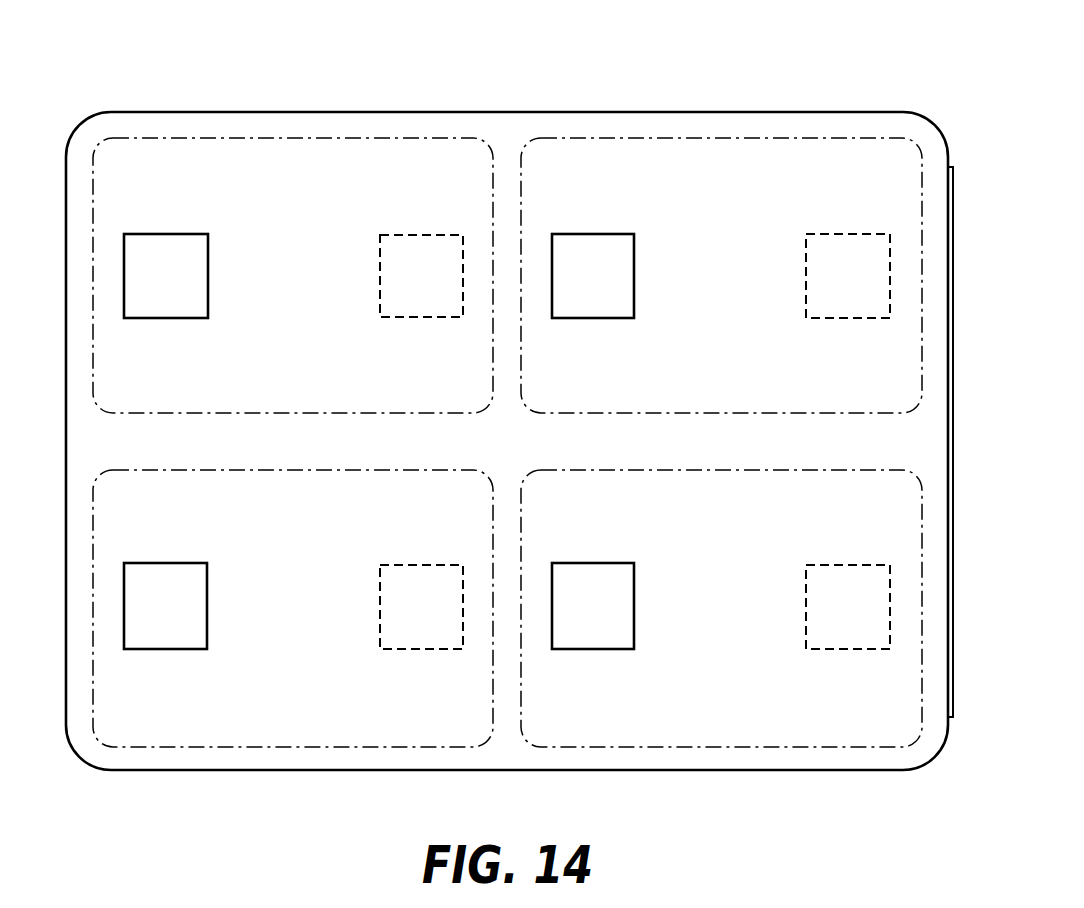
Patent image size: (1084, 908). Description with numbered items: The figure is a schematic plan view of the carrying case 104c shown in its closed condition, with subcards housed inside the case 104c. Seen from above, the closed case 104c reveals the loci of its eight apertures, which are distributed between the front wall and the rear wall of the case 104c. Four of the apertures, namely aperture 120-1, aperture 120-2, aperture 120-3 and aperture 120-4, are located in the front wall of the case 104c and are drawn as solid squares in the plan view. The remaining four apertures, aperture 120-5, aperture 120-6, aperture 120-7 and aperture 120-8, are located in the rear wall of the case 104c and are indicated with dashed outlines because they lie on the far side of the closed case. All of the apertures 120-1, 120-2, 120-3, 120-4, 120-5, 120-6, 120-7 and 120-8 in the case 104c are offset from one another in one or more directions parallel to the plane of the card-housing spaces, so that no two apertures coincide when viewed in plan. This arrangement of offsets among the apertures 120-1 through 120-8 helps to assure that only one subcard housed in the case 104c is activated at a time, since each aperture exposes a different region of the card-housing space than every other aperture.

The case 104c is at (664, 106).
The aperture 120-1 is at (168, 240).
The aperture 120-2 is at (168, 570).
The aperture 120-3 is at (595, 570).
The aperture 120-4 is at (595, 240).
The aperture 120-5 is at (850, 240).
The aperture 120-6 is at (850, 570).
The aperture 120-7 is at (425, 240).
The aperture 120-8 is at (425, 570).